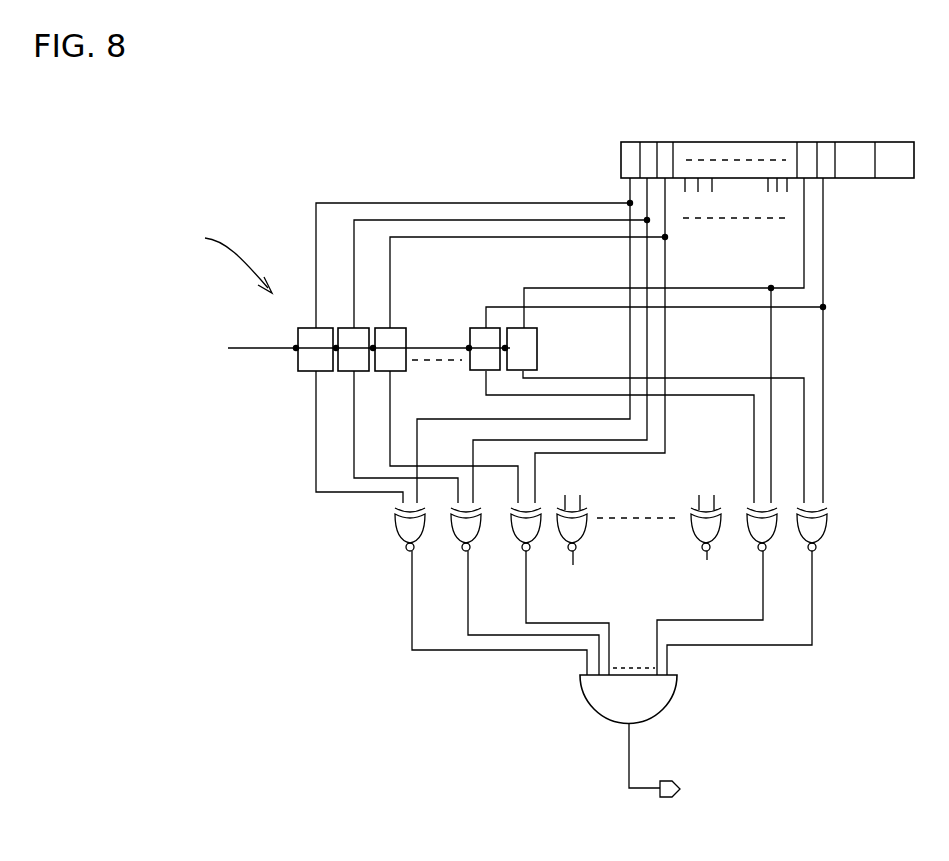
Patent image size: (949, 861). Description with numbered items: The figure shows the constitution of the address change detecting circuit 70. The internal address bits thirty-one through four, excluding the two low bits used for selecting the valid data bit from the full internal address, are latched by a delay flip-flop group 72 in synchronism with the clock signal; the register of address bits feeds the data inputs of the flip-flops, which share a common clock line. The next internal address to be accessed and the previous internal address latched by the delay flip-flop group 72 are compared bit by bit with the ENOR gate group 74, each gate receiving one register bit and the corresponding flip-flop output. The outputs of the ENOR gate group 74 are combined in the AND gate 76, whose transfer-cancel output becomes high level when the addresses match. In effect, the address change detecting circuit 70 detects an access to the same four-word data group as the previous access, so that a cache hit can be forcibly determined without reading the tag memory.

The address change detecting circuit 70 is at (396, 130).
The delay flip-flop group 72 is at (540, 350).
The ENOR gate group 74 is at (836, 523).
The AND gate 76 is at (646, 699).